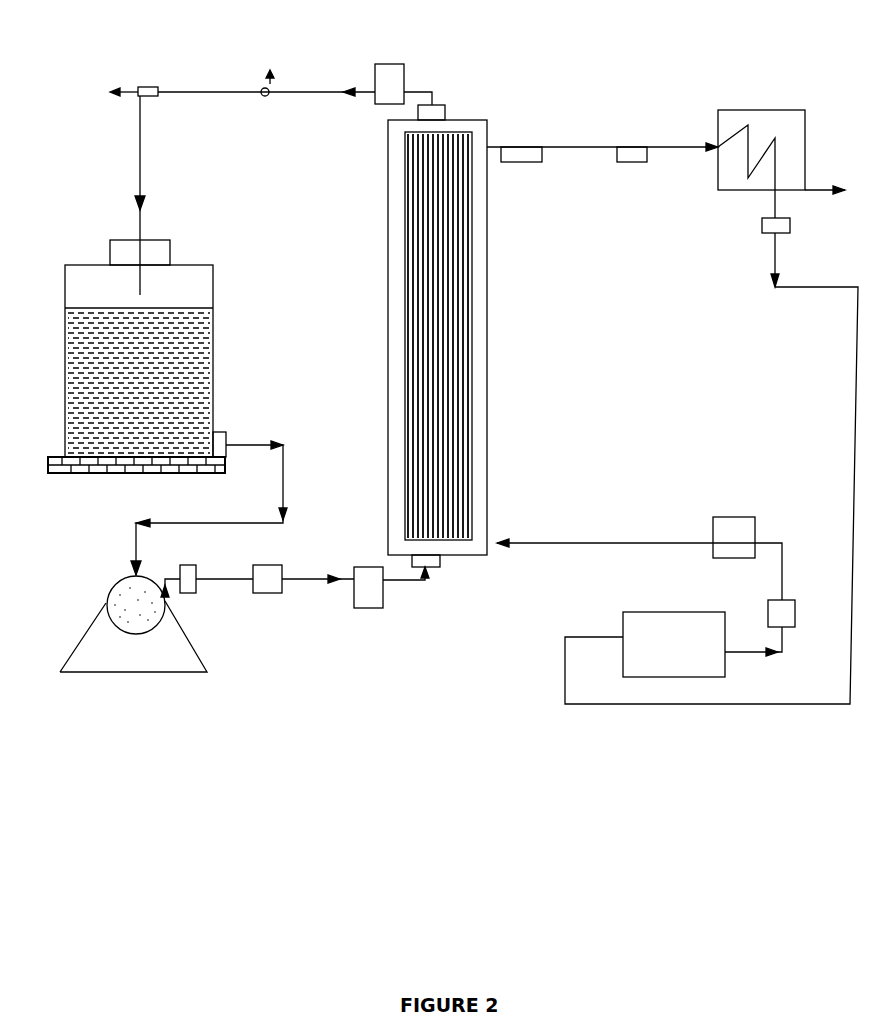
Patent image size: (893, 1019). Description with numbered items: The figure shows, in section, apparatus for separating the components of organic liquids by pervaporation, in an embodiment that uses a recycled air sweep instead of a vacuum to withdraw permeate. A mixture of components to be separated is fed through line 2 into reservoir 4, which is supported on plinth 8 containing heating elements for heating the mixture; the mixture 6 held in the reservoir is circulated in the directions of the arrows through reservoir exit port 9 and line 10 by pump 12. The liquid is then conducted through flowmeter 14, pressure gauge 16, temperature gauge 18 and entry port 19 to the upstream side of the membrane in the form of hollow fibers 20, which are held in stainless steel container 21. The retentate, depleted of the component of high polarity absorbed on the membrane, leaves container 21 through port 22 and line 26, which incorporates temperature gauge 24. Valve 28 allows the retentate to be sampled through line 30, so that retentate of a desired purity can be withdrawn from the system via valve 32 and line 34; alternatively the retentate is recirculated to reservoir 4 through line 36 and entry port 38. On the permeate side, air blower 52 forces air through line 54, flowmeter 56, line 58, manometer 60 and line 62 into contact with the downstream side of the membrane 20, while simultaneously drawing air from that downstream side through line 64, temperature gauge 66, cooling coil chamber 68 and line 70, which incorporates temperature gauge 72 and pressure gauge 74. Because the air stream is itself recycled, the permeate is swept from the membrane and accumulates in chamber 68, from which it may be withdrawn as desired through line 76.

The line 2 is at (62, 349).
The reservoir 4 is at (65, 300).
The slurry 6 is at (196, 414).
The plinth 8 is at (42, 466).
The reservoir exit port 9 is at (240, 458).
The line 10 is at (209, 508).
The pump 12 is at (104, 600).
The flowmeter 14 is at (200, 590).
The pressure gauge 16 is at (290, 560).
The temperature gauge 18 is at (395, 602).
The entry port 19 is at (440, 565).
The hollow fibers 20 is at (487, 297).
The stainless steel container 21 is at (494, 348).
The port 22 is at (448, 113).
The temperature gauge 24 is at (410, 64).
The line 26 is at (338, 84).
The valve 28 is at (262, 86).
The line 30 is at (278, 72).
The valve 32 is at (158, 88).
The line 34 is at (123, 97).
The line 36 is at (155, 195).
The entry port 38 is at (178, 255).
The air blower 52 is at (684, 608).
The line 54 is at (770, 656).
The flowmeter 56 is at (796, 612).
The line 58 is at (792, 590).
The manometer 60 is at (752, 514).
The line 62 is at (626, 533).
The line 64 is at (844, 412).
The temperature gauge 66 is at (786, 240).
The cooling coil chamber 68 is at (822, 150).
The line 70 is at (602, 161).
The temperature gauge 72 is at (630, 132).
The pressure gauge 74 is at (542, 140).
The line 76 is at (834, 180).